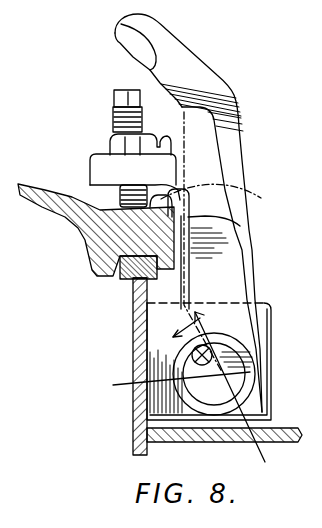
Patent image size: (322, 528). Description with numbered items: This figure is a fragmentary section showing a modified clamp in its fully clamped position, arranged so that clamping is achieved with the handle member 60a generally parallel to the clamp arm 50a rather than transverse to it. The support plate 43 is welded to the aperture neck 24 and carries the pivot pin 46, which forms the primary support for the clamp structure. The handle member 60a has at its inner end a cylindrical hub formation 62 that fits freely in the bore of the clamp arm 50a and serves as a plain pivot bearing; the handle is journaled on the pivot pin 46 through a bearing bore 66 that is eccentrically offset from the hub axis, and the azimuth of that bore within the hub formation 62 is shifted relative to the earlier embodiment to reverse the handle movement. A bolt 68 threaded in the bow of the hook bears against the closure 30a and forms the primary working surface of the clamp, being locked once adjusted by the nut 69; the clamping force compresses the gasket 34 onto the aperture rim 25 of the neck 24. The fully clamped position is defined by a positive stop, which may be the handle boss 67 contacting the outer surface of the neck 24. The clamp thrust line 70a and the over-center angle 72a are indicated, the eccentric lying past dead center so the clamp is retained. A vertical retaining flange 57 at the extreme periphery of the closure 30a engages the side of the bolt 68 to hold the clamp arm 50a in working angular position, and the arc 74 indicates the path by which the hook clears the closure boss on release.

The handle member 60a is at (222, 72).
The bearing bore 66 is at (132, 43).
The clamp arm 50a is at (226, 163).
The bolt 68 is at (114, 100).
The nut 69 is at (108, 142).
The arc 74 is at (252, 198).
The vertical retaining flange 57 is at (240, 224).
The closure 30a is at (83, 233).
The gasket 34 is at (118, 276).
The neck 24 is at (133, 414).
The aperture rim 25 is at (135, 290).
The handle boss 67 is at (260, 412).
The support plate 43 is at (272, 305).
The clamp thrust line 70a is at (174, 289).
The hub formation 62 is at (250, 372).
The over-center angle 72a is at (193, 313).
The pivot pin 46 is at (164, 391).